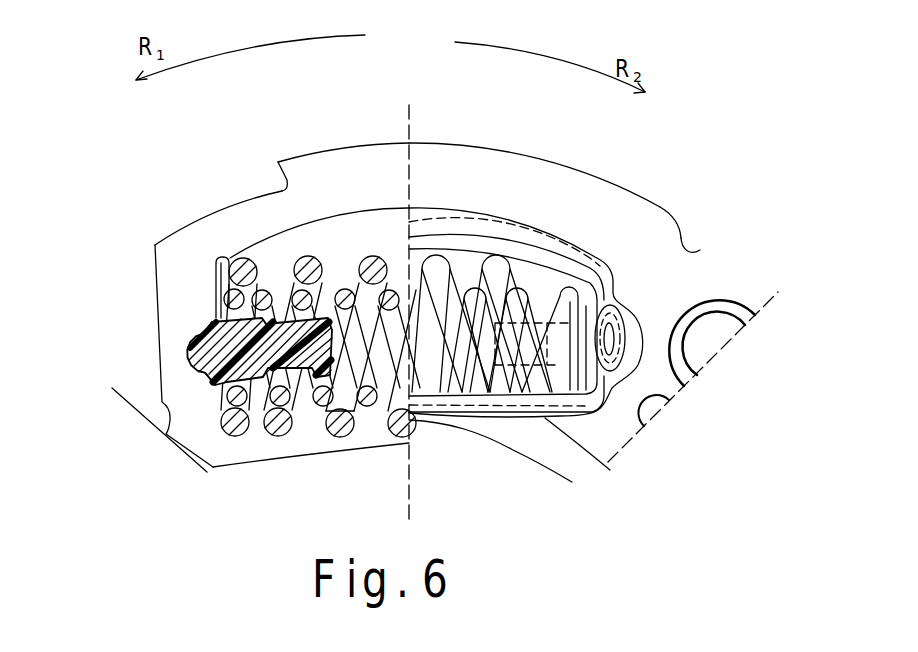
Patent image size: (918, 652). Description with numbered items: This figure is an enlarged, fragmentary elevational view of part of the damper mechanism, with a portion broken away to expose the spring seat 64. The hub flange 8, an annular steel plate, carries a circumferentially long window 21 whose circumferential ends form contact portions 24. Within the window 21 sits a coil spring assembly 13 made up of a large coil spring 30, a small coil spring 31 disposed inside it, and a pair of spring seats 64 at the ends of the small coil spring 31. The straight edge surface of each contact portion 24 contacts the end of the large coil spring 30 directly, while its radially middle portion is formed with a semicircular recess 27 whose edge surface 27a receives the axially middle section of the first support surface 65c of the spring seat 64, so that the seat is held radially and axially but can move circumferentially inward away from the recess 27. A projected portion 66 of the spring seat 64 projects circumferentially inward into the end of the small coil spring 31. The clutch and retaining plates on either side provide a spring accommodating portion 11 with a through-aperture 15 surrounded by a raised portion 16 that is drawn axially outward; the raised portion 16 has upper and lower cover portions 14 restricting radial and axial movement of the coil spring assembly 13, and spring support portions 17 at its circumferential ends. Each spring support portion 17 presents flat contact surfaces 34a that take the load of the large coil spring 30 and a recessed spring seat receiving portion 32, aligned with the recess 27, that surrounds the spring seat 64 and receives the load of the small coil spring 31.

The hub flange 8 is at (348, 167).
The spring accommodating portion 11 is at (567, 223).
The coil spring assembly 13 is at (465, 266).
The cover portion 14 is at (433, 225).
The through-aperture 15 is at (536, 260).
The raised portion 16 is at (613, 266).
The spring support portion 17 is at (650, 325).
The window 21 is at (290, 237).
The contact portion 24 is at (214, 435).
The recess 27 is at (192, 343).
The edge surface of the recess 27a is at (190, 373).
The large coil spring 30 is at (225, 257).
The small coil spring 31 is at (290, 392).
The spring seat receiving portion 32 is at (631, 320).
The contact surface 34a is at (668, 203).
The spring seat 64 is at (196, 321).
The first support surface 65c is at (193, 373).
The projected portion 66 is at (343, 362).